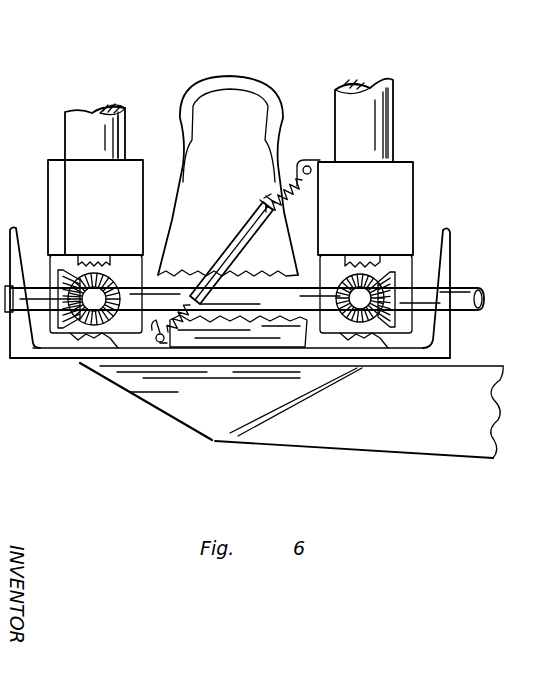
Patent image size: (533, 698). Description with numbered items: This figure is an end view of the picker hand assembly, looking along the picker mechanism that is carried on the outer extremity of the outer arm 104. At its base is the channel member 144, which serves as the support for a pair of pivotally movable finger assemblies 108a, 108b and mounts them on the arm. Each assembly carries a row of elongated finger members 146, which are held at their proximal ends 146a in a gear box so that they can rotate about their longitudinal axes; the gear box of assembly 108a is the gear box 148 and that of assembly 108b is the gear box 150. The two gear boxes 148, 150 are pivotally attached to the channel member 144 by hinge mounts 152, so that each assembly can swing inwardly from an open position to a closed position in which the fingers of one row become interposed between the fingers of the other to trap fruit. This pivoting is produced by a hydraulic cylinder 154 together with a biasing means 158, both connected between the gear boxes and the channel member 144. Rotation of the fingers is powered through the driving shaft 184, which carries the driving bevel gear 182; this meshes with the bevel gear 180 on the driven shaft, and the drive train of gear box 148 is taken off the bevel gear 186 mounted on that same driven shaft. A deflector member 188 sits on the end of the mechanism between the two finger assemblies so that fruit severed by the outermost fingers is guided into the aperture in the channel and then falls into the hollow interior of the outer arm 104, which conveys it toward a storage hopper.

The outer arm 104 is at (327, 448).
The finger assembly 108a is at (73, 113).
The finger assembly 108b is at (395, 90).
The channel member 144 is at (452, 320).
The finger members 146 is at (65, 140).
The proximal end 146a is at (125, 148).
The gear box 148 is at (48, 177).
The gear box 150 is at (413, 176).
The hinge mounts 152 is at (67, 335).
The hydraulic cylinder 154 is at (247, 232).
The biasing means 158 is at (276, 194).
The bevel gear 180 is at (338, 275).
The driving bevel gear 182 is at (390, 272).
The driving shaft 184 is at (453, 292).
The bevel gear 186 is at (65, 285).
The deflector member 188 is at (200, 104).